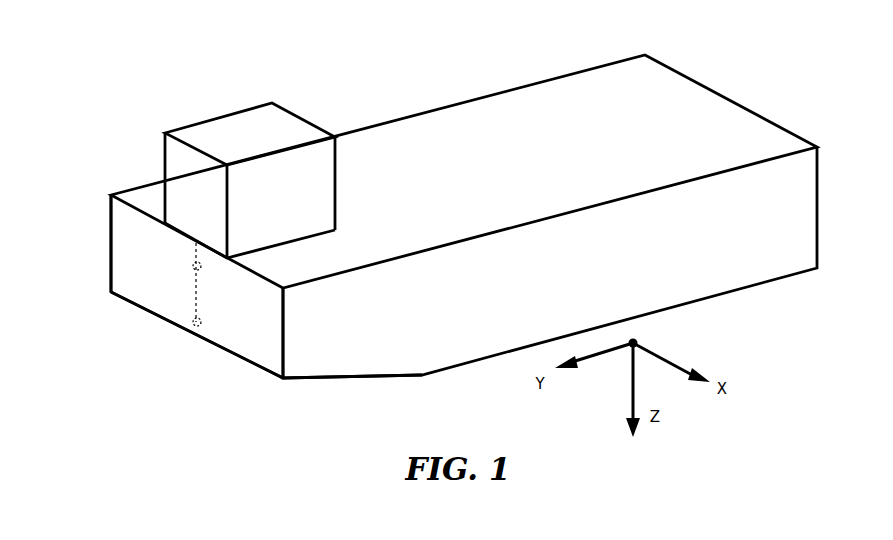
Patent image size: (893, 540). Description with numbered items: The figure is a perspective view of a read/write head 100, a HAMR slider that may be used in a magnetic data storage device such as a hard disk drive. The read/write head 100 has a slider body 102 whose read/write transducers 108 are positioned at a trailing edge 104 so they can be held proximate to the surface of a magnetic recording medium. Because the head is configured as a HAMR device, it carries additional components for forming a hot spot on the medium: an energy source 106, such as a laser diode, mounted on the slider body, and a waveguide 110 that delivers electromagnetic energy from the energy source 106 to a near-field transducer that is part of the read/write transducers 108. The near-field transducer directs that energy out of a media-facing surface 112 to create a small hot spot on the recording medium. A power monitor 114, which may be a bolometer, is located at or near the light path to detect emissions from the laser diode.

The read/write head 100 is at (342, 54).
The slider body 102 is at (413, 118).
The trailing edge 104 is at (117, 266).
The energy source 106 is at (252, 122).
The read/write transducers 108 is at (192, 358).
The waveguide 110 is at (193, 283).
The media-facing surface 112 is at (281, 382).
The power monitor 114 is at (193, 265).